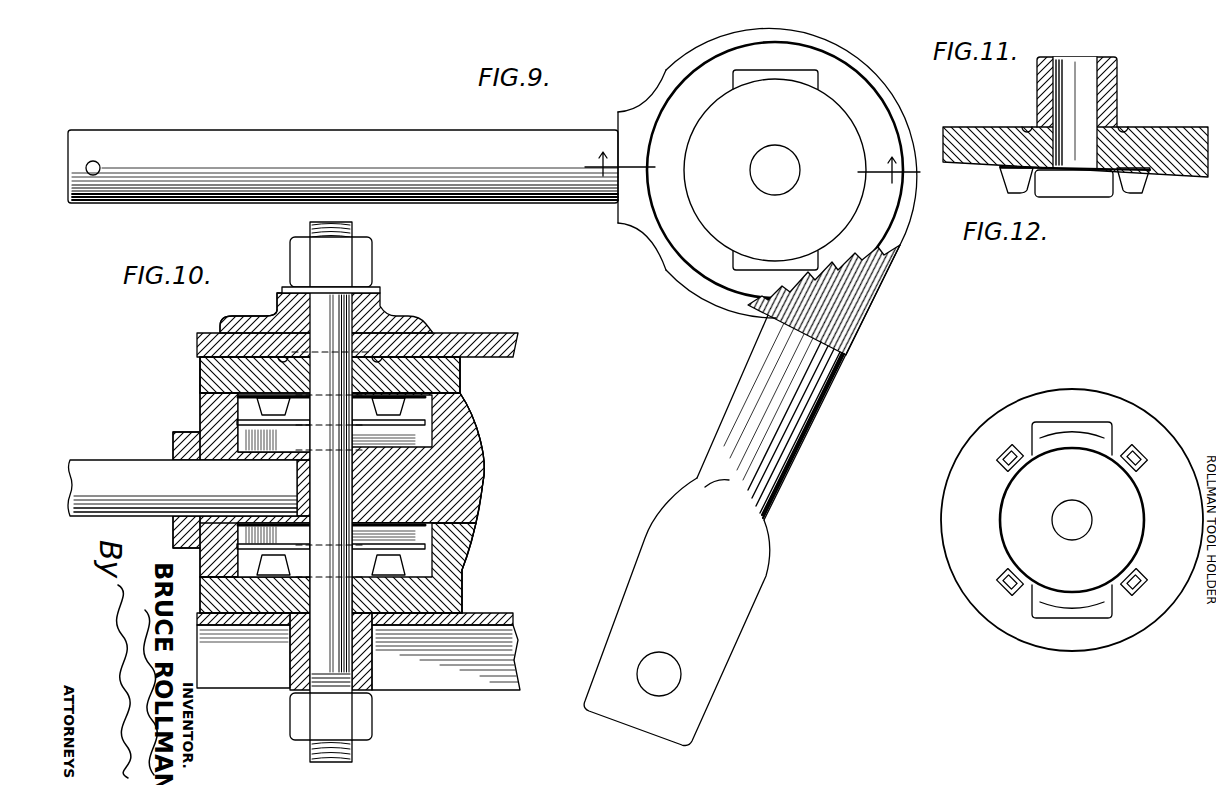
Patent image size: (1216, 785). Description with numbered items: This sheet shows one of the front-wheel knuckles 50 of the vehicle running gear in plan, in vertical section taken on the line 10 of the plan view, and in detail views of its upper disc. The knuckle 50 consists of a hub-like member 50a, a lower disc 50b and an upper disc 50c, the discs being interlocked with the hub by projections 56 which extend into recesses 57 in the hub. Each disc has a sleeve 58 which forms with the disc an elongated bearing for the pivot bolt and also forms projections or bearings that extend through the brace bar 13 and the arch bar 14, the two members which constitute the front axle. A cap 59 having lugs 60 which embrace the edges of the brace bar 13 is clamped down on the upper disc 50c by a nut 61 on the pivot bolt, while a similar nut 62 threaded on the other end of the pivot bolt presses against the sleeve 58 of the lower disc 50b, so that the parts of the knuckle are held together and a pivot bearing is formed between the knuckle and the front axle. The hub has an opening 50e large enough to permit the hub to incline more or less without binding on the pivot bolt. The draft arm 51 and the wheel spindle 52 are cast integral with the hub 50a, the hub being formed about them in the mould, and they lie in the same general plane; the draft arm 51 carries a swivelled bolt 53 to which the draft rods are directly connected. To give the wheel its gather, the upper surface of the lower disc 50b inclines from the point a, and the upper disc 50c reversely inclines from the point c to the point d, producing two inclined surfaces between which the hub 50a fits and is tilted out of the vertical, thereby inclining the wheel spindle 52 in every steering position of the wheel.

In FIG. 9, the section line 10— 10 is at (745, 168).
In FIG. 10, the brace bar 13 is at (483, 340).
In FIG. 10, the arch bar 14 is at (497, 643).
In FIG. 9, the knuckle 50 is at (695, 248).
In FIG. 10, the knuckle 50 is at (200, 412).
In FIG. 9, the hub-like member 50a is at (700, 298).
In FIG. 10, the hub-like member 50a is at (470, 449).
In FIG. 10, the lower disc 50b is at (447, 588).
In FIG. 10, the upper disc 50c is at (462, 374).
In FIG. 11, the upper disc 50c is at (1182, 96).
In FIG. 12, the upper disc 50c is at (1200, 408).
In FIG. 9, the opening 50e is at (797, 156).
In FIG. 10, the opening 50e is at (470, 483).
In FIG. 9, the draft arm 51 is at (782, 477).
In FIG. 9, the wheel spindle 52 is at (379, 134).
In FIG. 10, the wheel spindle 52 is at (127, 470).
In FIG. 9, the swivelled bolt 53 is at (737, 614).
In FIG. 10, the projections 56 is at (430, 428).
In FIG. 11, the projections 56 is at (1093, 190).
In FIG. 12, the projections 56 is at (1102, 422).
In FIG. 9, the recesses 57 is at (800, 77).
In FIG. 10, the recesses 57 is at (363, 422).
In FIG. 11, the recesses 57 is at (1075, 168).
In FIG. 10, the sleeve 58 is at (360, 311).
In FIG. 11, the sleeve 58 is at (1108, 74).
In FIG. 10, the cap 59 is at (275, 307).
In FIG. 10, the lugs 60 is at (218, 327).
In FIG. 10, the nut 61 is at (360, 255).
In FIG. 10, the nut 62 is at (290, 718).
In FIG. 10, the point a is at (410, 568).
In FIG. 10, the point c is at (202, 400).
In FIG. 11, the point c is at (1205, 178).
In FIG. 10, the point d is at (423, 397).
In FIG. 11, the point d is at (945, 164).